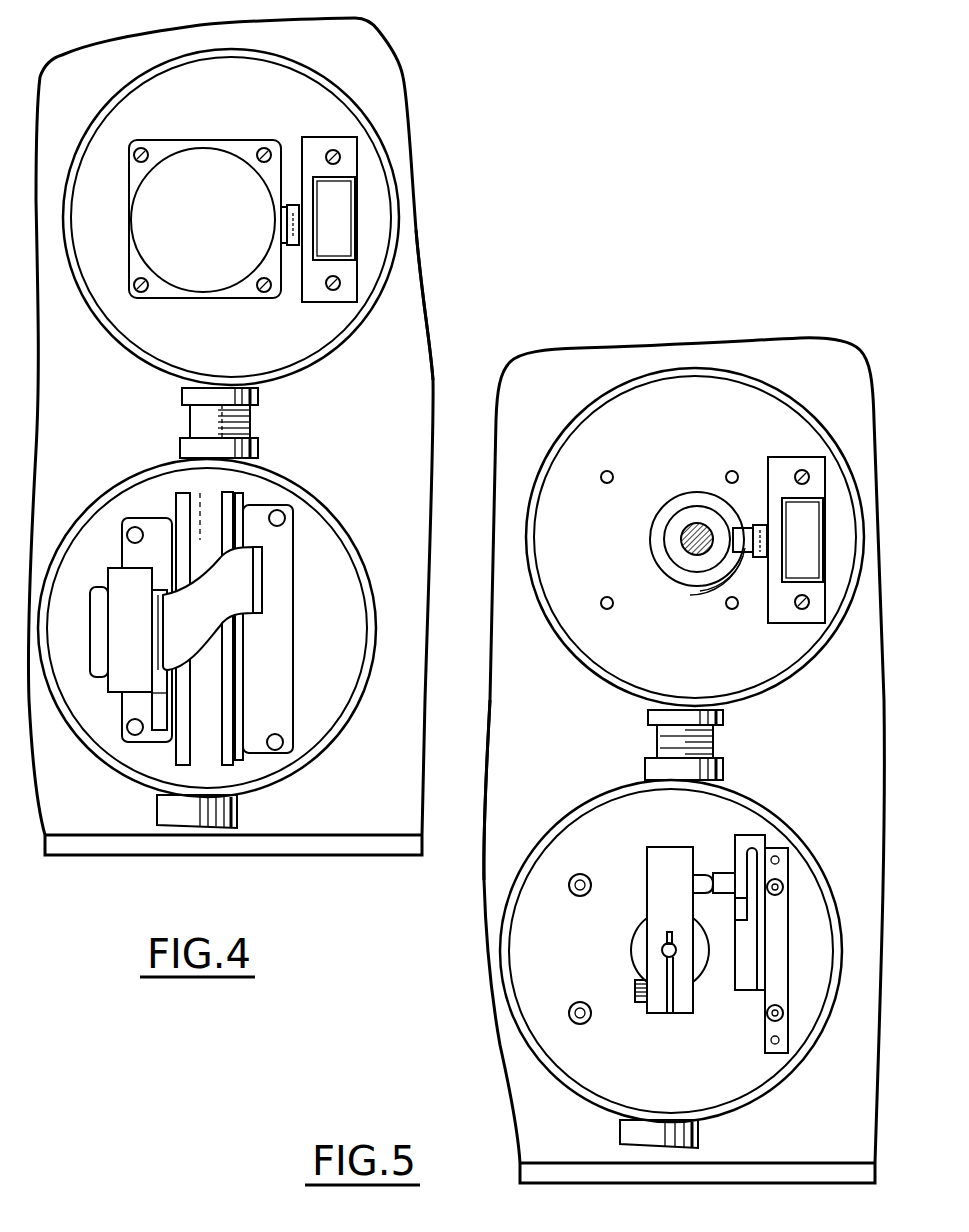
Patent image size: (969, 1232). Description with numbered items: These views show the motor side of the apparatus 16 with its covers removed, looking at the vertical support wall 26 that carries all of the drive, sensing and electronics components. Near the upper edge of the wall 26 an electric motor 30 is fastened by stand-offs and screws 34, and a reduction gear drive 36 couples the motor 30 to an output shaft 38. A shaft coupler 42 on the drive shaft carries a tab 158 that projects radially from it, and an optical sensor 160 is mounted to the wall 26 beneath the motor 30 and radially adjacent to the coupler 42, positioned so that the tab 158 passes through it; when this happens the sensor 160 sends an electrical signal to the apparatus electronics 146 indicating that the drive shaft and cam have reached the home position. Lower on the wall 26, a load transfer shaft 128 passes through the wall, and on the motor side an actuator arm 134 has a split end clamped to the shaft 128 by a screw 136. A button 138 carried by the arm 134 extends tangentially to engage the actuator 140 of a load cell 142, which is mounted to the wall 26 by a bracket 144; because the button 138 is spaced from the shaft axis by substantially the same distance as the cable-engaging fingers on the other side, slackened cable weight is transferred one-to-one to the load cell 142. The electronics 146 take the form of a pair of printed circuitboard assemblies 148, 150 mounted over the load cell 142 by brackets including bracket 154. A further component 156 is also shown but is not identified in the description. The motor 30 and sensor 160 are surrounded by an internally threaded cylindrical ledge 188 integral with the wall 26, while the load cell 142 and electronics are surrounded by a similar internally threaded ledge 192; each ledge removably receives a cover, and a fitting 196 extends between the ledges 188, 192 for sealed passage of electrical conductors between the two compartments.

In FIG. 4, the apparatus 16 is at (414, 30).
In FIG. 5, the apparatus 16 is at (749, 309).
In FIG. 4, the support wall 26 is at (425, 343).
In FIG. 5, the support wall 26 is at (480, 903).
In FIG. 4, the electric motor 30 is at (207, 157).
In FIG. 4, the screws 34 is at (142, 290).
In FIG. 4, the reduction gear drive 36 is at (250, 293).
In FIG. 5, the output shaft 38 is at (685, 537).
In FIG. 5, the shaft coupler 42 is at (687, 563).
In FIG. 5, the load transfer shaft 128 is at (663, 950).
In FIG. 5, the actuator arm 134 is at (653, 857).
In FIG. 5, the screw 136 is at (637, 1000).
In FIG. 5, the button 138 is at (702, 875).
In FIG. 5, the actuator 140 is at (758, 837).
In FIG. 5, the load cell 142 is at (745, 983).
In FIG. 5, the bracket 144 is at (778, 913).
In FIG. 4, the apparatus electronics 146 is at (165, 505).
In FIG. 4, the printed circuitboard assembly 148 is at (182, 490).
In FIG. 4, the printed circuitboard assembly 150 is at (230, 490).
In FIG. 4, the bracket 154 is at (130, 703).
In FIG. 4, the circuit board 156 is at (280, 623).
In FIG. 4, the tab 158 is at (287, 207).
In FIG. 5, the tab 158 is at (735, 513).
In FIG. 4, the optical sensor 160 is at (348, 193).
In FIG. 5, the optical sensor 160 is at (790, 510).
In FIG. 4, the internally threaded cylindrical flange or ledge 188 is at (400, 227).
In FIG. 5, the internally threaded cylindrical flange or ledge 188 is at (785, 391).
In FIG. 4, the internally threaded ledge 192 is at (306, 766).
In FIG. 5, the internally threaded ledge 192 is at (671, 964).
In FIG. 4, the fitting 196 is at (250, 427).
In FIG. 5, the fitting 196 is at (713, 743).